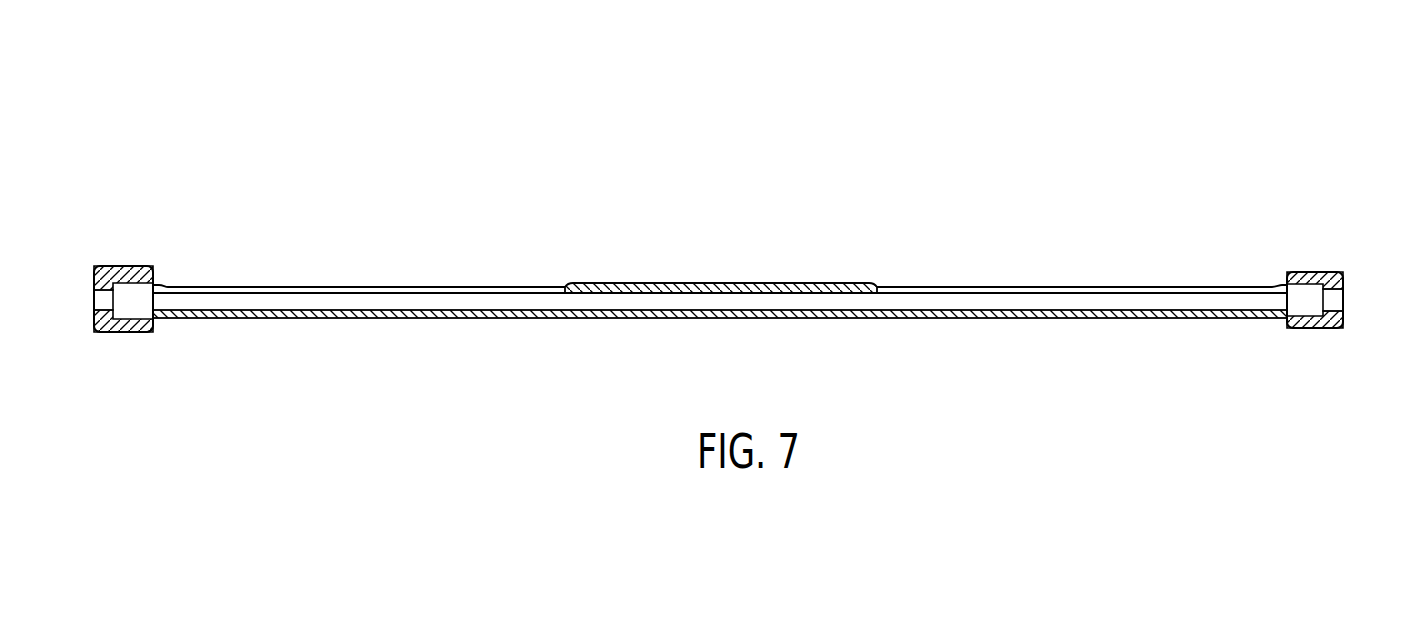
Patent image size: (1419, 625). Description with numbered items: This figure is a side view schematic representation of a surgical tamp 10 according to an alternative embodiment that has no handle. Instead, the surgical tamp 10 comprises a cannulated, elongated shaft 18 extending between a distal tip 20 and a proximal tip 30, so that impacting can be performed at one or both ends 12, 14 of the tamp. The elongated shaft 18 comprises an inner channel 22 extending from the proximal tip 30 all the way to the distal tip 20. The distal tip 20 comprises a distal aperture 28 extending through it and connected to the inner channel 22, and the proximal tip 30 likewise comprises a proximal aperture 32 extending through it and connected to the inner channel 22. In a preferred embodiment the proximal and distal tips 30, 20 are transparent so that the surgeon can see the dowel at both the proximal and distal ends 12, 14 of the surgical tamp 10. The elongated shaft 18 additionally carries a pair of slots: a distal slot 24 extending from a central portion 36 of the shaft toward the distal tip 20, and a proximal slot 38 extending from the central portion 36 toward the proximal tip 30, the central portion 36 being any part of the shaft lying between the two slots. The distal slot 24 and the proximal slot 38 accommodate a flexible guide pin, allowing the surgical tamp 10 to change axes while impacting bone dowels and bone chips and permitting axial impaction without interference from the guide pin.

The surgical tamp 10 is at (619, 124).
The distal end 12 is at (1241, 137).
The proximal end 14 is at (206, 156).
The elongated shaft 18 is at (465, 287).
The distal tip 20 is at (118, 266).
The inner channel 22 is at (304, 324).
The distal slot 24 is at (357, 286).
The distal aperture 28 is at (94, 302).
The proximal tip 30 is at (1313, 272).
The proximal aperture 32 is at (1343, 302).
The central portion 36 is at (728, 283).
The proximal slot 38 is at (1042, 287).